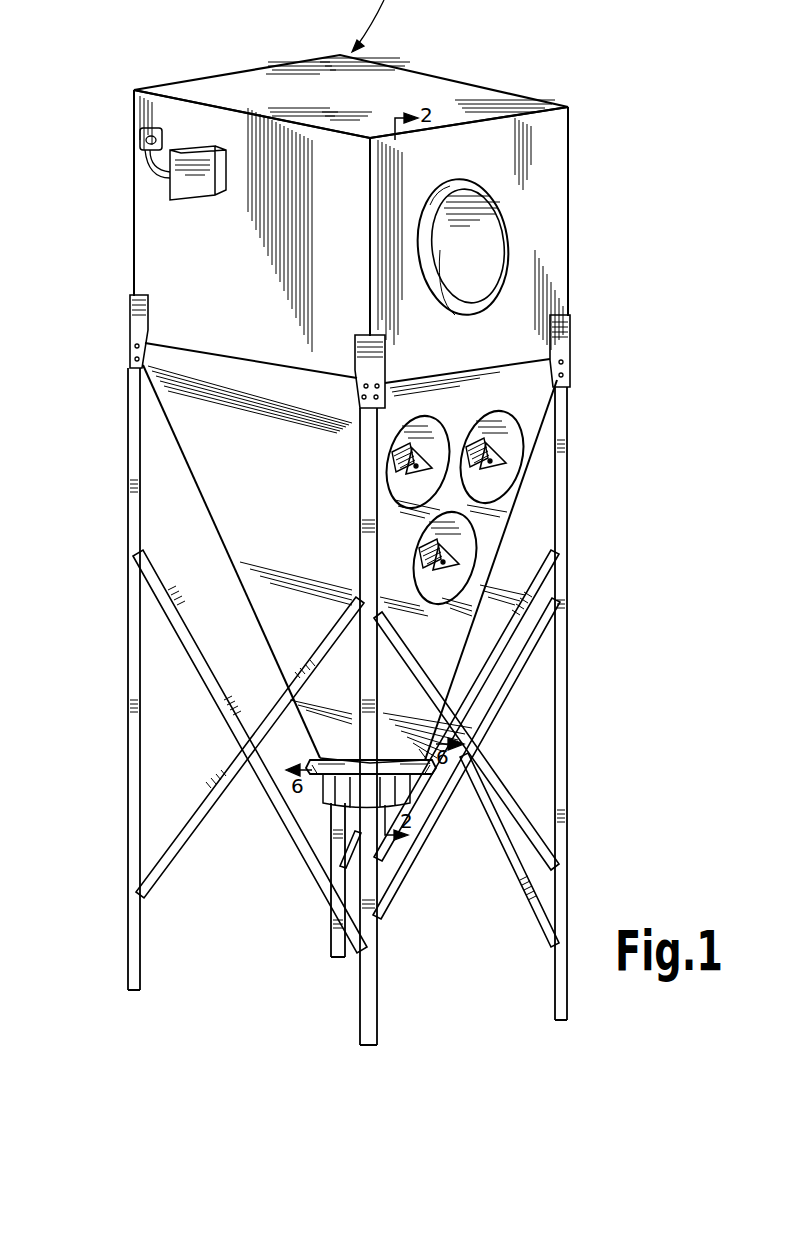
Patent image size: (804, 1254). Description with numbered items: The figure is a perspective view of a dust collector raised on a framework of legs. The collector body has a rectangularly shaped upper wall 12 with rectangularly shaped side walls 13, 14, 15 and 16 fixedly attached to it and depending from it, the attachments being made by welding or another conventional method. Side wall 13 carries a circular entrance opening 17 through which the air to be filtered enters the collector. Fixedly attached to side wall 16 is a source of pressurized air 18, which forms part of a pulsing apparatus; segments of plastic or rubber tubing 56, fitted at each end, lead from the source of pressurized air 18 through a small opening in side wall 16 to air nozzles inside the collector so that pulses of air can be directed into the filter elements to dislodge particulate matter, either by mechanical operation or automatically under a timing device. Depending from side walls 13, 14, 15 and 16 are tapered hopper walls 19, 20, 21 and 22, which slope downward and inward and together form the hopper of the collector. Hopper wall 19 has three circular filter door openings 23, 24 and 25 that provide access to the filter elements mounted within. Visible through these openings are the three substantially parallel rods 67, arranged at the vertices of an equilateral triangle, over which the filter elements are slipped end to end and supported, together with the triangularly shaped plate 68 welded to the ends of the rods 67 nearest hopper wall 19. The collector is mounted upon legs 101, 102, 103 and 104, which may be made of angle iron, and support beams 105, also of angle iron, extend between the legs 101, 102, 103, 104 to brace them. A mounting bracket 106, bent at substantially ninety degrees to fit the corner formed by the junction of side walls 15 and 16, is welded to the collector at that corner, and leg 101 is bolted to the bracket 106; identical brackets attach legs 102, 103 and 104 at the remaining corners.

The upper wall 12 is at (300, 72).
The side wall 13 is at (560, 197).
The side wall 14 is at (570, 126).
The side wall 15 is at (132, 100).
The side wall 16 is at (133, 252).
The circular entrance opening 17 is at (498, 222).
The source of pressurized air 18 is at (218, 194).
The hopper wall 19 is at (556, 394).
The hopper wall 20 is at (508, 526).
The hopper wall 21 is at (182, 452).
The hopper wall 22 is at (208, 490).
The filter door opening 23 is at (440, 600).
The filter door opening 24 is at (428, 426).
The filter door opening 25 is at (510, 420).
The tubing 56 is at (163, 185).
The rods 67 is at (436, 530).
The triangularly shaped plate 68 is at (452, 556).
The leg 101 is at (134, 992).
The leg 102 is at (360, 1052).
The leg 103 is at (568, 1024).
The leg 104 is at (332, 960).
The support beams 105 is at (196, 670).
The mounting bracket 106 is at (128, 342).